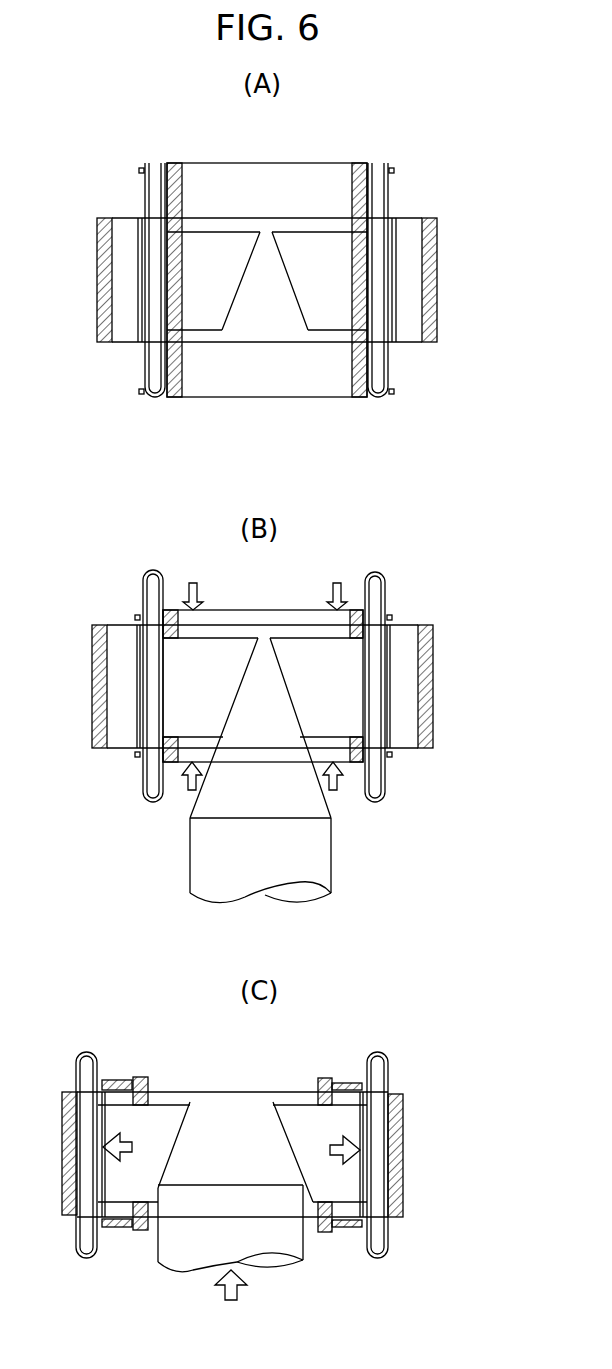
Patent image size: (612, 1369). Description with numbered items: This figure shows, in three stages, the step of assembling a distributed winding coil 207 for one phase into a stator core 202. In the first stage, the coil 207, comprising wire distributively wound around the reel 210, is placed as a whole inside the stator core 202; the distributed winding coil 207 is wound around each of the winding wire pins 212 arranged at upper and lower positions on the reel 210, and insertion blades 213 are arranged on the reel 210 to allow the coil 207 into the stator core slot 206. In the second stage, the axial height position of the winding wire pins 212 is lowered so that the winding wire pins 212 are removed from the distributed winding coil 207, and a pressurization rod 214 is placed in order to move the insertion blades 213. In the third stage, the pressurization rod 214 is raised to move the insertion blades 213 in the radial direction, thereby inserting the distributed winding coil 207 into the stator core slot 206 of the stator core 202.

The stator core 202 is at (438, 265).
The stator core slot 206 is at (408, 237).
The distributed winding coil 207 is at (140, 190).
The reel 210 is at (168, 163).
The winding wire pins 212 is at (140, 163).
The insertion blades 213 is at (337, 272).
The pressurization rod 214 is at (318, 842).